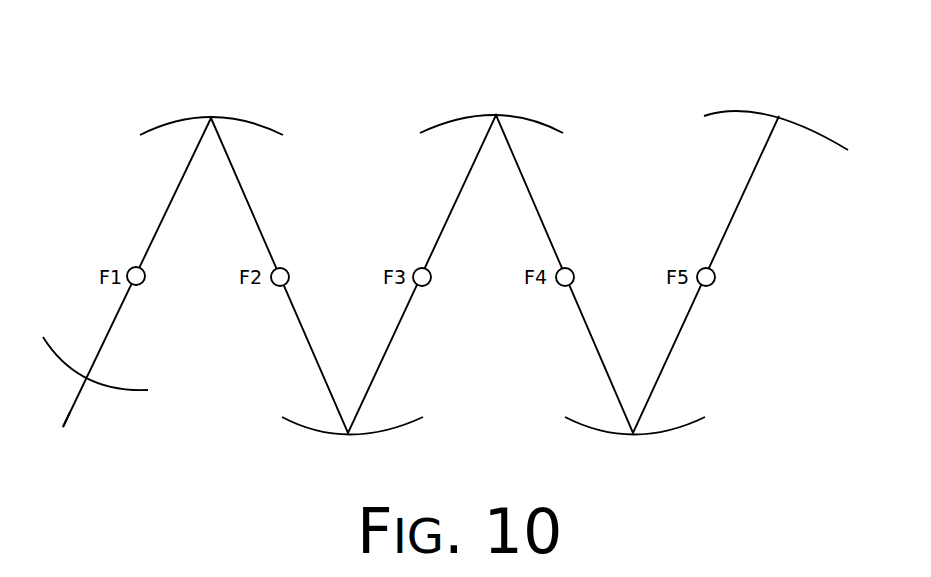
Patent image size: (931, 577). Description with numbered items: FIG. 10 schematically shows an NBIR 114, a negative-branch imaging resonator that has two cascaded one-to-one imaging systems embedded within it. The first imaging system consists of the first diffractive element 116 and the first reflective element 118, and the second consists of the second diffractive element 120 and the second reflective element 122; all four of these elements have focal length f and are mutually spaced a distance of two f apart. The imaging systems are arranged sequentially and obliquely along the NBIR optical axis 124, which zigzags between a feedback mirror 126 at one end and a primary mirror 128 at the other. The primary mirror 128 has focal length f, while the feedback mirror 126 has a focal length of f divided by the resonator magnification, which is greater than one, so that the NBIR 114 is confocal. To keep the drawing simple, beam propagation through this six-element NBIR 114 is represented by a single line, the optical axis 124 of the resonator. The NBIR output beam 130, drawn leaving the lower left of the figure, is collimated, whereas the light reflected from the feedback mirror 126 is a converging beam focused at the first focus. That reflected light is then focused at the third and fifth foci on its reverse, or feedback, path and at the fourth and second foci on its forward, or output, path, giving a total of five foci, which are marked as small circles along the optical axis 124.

The NBIR 114 is at (133, 73).
The D1 116 is at (263, 130).
The R1 118 is at (396, 427).
The D2 120 is at (540, 127).
The R2 122 is at (691, 423).
The NBIR optical axis 124 is at (120, 314).
The feedback mirror 126 is at (130, 394).
The primary mirror 128 is at (815, 132).
The NBIR output beam 130 is at (64, 427).